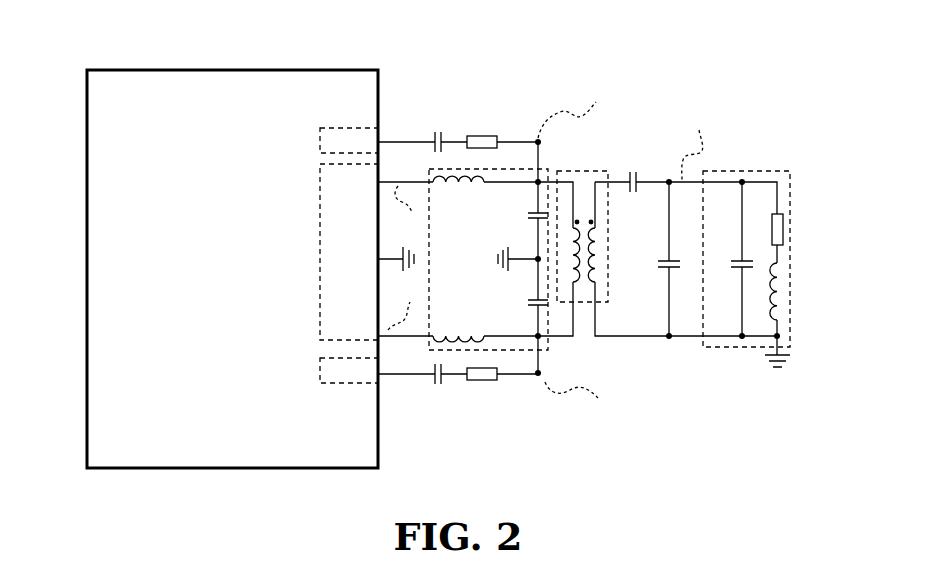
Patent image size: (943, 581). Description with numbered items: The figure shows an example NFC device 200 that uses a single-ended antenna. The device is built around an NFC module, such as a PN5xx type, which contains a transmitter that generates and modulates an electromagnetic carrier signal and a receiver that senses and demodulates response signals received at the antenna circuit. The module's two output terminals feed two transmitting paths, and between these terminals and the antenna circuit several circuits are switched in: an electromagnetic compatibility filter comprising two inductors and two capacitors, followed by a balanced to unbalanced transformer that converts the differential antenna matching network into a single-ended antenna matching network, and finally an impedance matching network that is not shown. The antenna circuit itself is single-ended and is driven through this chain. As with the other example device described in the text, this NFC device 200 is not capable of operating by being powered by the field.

The NFC transmitter circuit with antenna matching network 200 is at (462, 79).